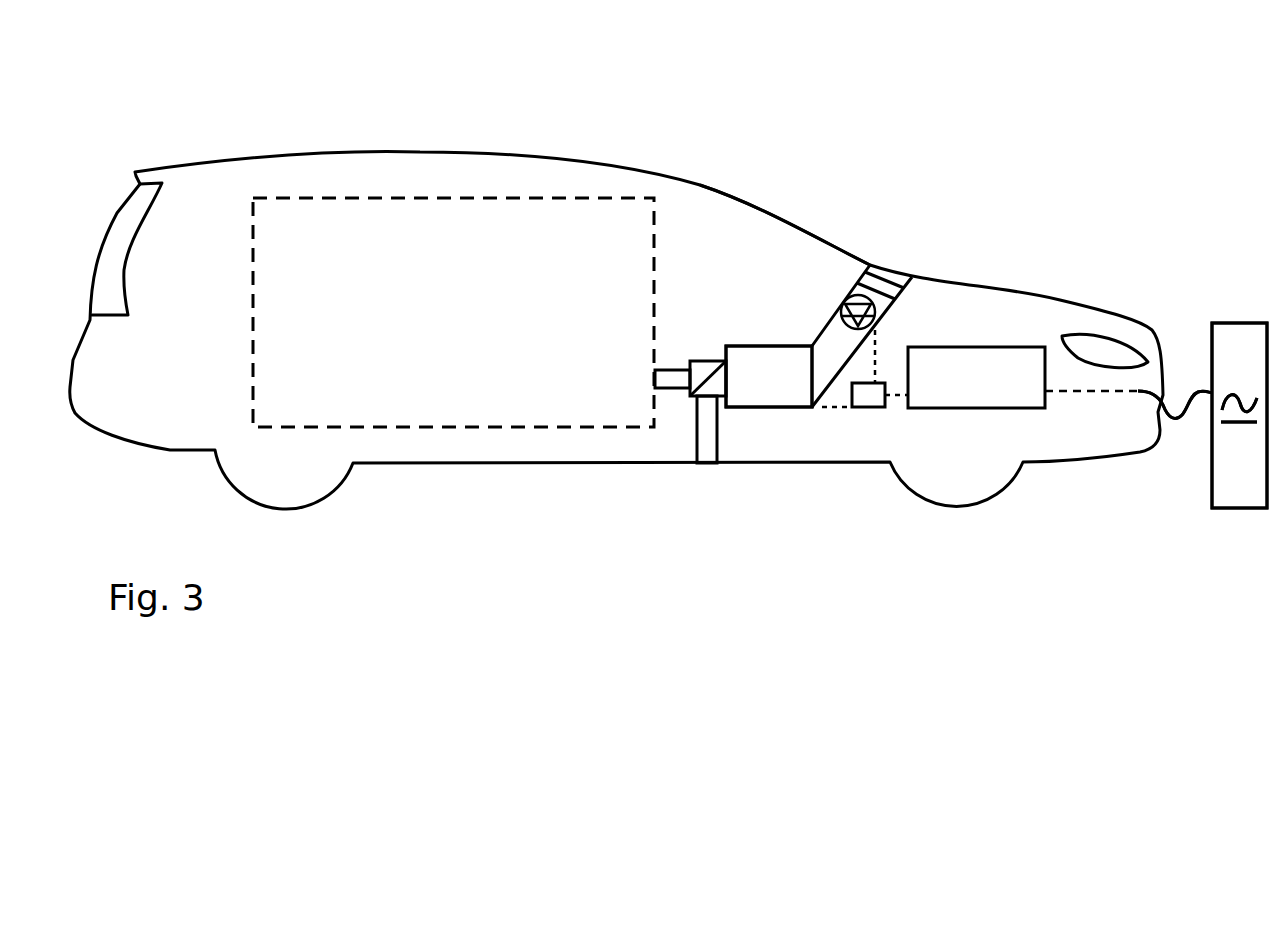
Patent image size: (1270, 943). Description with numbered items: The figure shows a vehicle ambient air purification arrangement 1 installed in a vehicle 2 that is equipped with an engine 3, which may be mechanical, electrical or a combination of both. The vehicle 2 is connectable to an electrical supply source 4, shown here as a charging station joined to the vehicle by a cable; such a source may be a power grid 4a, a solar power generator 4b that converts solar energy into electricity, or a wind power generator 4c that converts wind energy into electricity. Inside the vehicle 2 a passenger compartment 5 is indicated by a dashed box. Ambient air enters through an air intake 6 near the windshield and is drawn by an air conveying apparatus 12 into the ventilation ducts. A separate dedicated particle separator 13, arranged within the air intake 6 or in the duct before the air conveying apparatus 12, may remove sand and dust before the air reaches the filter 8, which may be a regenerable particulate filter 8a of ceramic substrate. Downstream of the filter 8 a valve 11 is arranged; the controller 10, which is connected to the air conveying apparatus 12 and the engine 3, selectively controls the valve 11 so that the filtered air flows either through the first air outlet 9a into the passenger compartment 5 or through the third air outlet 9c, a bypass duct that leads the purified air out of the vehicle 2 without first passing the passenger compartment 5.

The vehicle ambient air purification arrangement 1 is at (755, 222).
The vehicle 2 is at (396, 108).
The engine 3 is at (984, 392).
The electrical supply source 4 is at (1172, 498).
The power grid 4a is at (1239, 415).
The solar power generator 4b is at (1175, 404).
The wind power generator 4c is at (1239, 408).
The passenger compartment 5 is at (469, 321).
The air intake 6 is at (890, 252).
The filter 8 is at (800, 389).
The particulate filter 8a is at (769, 376).
The first air outlet 9a is at (670, 370).
The third air outlet 9c is at (720, 440).
The controller 10 is at (867, 408).
The valve 11 is at (680, 404).
The air conveying apparatus 12 is at (832, 294).
The separate dedicated particle separator 13 is at (912, 302).